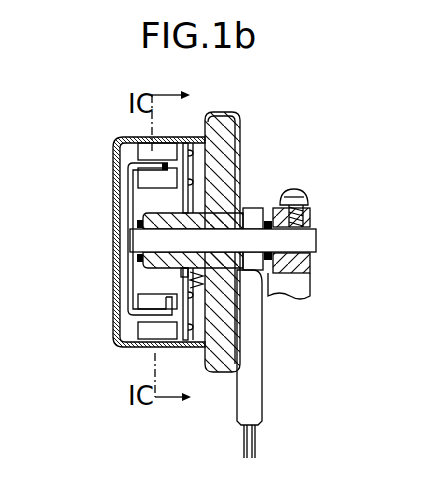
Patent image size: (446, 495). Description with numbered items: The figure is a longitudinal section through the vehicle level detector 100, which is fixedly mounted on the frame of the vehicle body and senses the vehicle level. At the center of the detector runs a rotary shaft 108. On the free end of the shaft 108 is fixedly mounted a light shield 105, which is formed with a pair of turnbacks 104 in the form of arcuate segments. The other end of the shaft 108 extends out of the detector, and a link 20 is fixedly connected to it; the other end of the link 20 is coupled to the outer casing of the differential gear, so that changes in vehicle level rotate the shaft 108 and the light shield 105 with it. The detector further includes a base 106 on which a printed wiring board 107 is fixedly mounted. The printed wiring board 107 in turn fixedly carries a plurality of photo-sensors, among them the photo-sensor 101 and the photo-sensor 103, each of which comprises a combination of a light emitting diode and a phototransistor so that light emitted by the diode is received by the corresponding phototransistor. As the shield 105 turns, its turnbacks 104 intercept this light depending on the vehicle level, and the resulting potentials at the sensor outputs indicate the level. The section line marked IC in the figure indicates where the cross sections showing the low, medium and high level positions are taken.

The link 20 is at (313, 262).
The vehicle level detector 100 is at (108, 157).
The photo-sensor 101 is at (148, 340).
The photo-sensor 103 is at (150, 179).
The turnbacks 104 is at (165, 153).
The light shield 105 is at (128, 200).
The base 106 is at (223, 185).
The printed wiring board 107 is at (188, 162).
The rotary shaft 108 is at (312, 240).